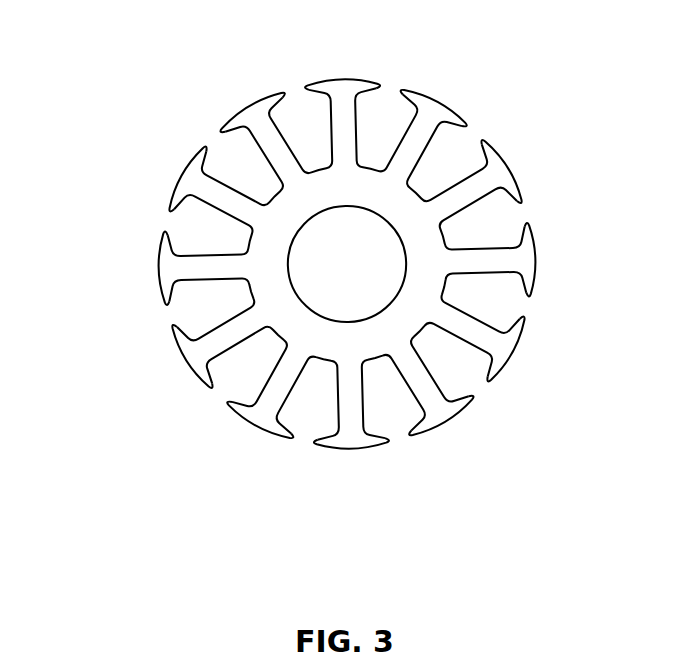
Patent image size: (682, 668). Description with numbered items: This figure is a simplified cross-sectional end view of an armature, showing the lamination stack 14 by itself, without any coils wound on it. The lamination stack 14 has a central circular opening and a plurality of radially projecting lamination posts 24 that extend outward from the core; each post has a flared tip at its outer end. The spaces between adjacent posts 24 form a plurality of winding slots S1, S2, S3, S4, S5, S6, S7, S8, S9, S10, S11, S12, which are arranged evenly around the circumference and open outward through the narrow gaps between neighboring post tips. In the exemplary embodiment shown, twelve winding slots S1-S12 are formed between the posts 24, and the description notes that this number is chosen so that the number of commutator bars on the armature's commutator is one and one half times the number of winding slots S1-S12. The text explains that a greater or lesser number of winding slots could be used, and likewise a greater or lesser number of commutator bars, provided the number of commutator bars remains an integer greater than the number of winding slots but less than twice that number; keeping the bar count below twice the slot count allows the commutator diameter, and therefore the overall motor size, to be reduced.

The lamination stack 14 is at (313, 264).
The lamination posts 24 is at (344, 86).
The winding slot S1 is at (305, 118).
The winding slot S2 is at (381, 115).
The winding slot S3 is at (461, 141).
The winding slot S4 is at (493, 215).
The winding slot S5 is at (501, 304).
The winding slot S6 is at (469, 379).
The winding slot S7 is at (394, 417).
The winding slot S8 is at (315, 421).
The winding slot S9 is at (240, 383).
The winding slot S10 is at (189, 305).
The winding slot S11 is at (189, 226).
The winding slot S12 is at (230, 151).